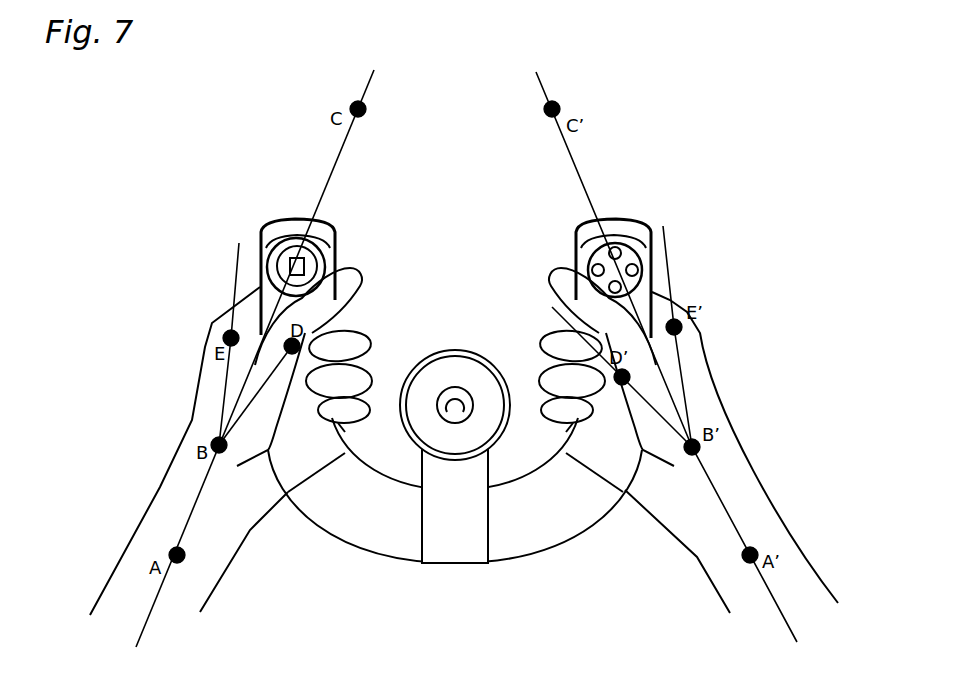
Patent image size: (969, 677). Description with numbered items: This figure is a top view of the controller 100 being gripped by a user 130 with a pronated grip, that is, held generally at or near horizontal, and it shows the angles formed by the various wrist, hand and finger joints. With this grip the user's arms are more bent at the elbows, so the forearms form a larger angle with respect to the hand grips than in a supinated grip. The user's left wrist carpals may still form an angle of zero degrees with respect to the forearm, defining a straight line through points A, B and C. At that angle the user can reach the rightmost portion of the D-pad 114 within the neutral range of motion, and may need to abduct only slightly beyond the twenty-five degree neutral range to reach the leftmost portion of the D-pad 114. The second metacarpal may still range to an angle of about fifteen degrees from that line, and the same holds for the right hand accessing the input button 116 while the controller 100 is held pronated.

The controller 100 is at (468, 545).
The directional pad (D-pad) 114 is at (306, 267).
The input buttons 116 is at (595, 270).
The user 130 is at (168, 503).